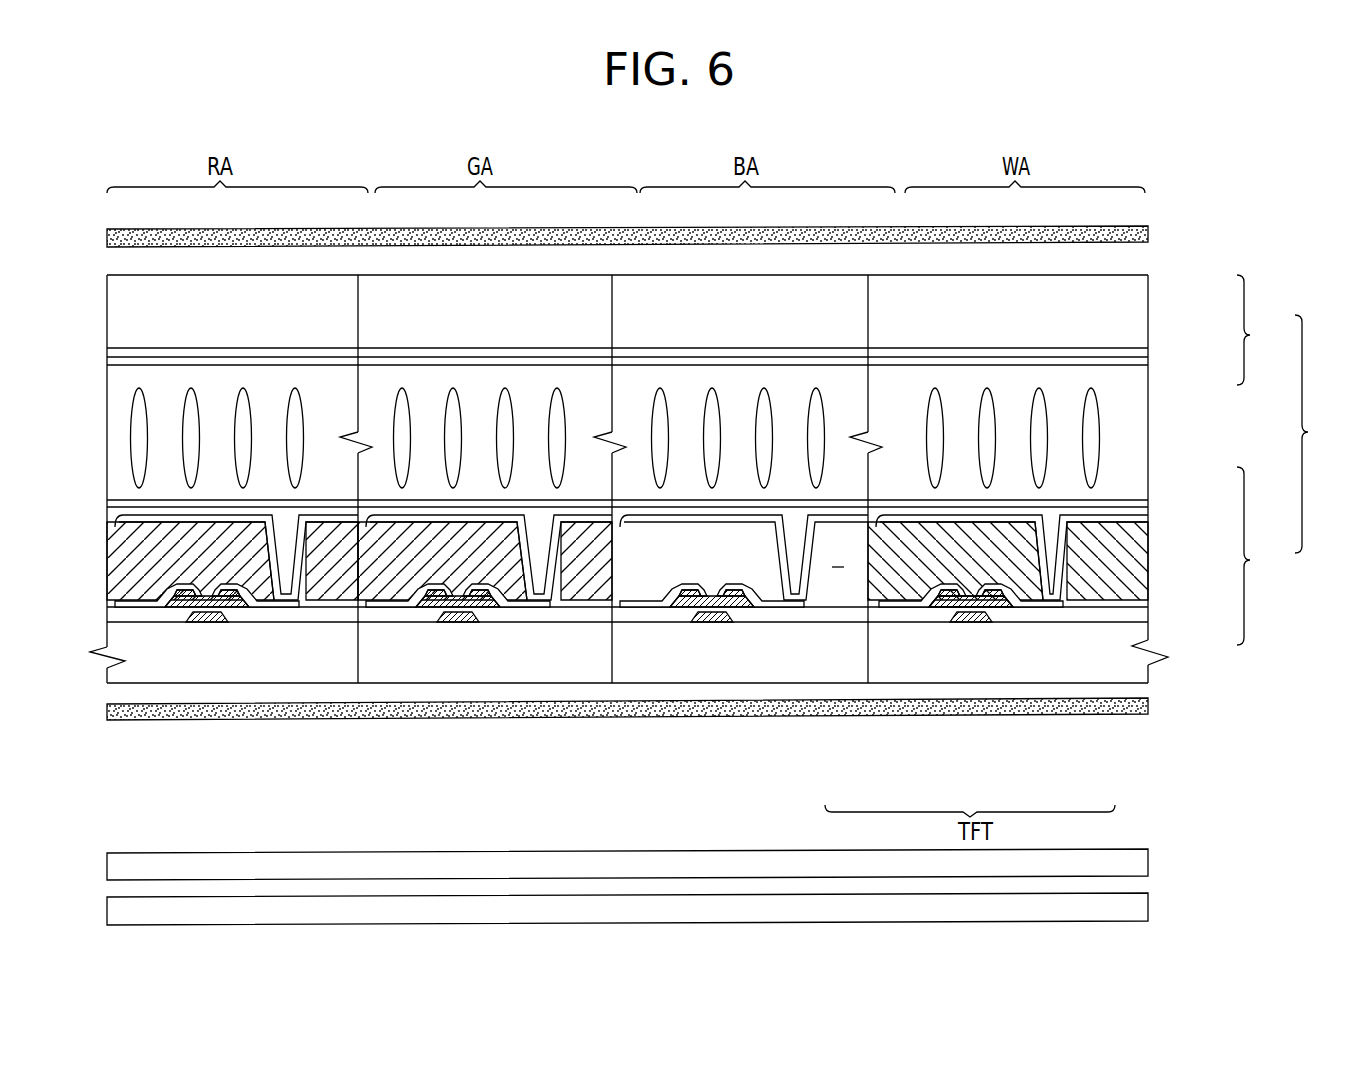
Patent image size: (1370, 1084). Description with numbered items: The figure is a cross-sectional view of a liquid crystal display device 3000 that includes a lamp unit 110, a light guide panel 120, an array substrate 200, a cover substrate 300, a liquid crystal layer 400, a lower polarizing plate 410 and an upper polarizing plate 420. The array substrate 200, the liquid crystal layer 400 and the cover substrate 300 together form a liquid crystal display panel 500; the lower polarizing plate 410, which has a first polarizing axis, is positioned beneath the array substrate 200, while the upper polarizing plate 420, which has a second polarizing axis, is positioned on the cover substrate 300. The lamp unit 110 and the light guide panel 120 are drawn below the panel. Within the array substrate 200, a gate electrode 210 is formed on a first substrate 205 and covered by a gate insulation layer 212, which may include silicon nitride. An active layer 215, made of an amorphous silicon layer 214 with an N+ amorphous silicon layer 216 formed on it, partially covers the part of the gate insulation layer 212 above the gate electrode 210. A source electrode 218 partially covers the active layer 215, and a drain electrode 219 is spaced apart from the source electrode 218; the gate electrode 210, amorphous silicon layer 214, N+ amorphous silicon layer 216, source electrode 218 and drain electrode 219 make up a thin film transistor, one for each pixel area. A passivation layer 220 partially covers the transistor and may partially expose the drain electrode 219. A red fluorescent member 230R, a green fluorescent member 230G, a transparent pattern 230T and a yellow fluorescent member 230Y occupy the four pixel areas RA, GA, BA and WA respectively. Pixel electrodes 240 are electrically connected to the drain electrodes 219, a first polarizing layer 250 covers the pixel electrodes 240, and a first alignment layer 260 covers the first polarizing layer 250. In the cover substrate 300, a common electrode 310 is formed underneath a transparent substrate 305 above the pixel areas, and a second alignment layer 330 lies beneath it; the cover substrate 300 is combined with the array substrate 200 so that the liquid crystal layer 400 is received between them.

The liquid crystal display device 3000 is at (690, 142).
The liquid crystal display panel 500 is at (1318, 434).
The cover substrate 300 is at (1264, 330).
The transparent substrate 305 is at (1148, 286).
The common electrode 310 is at (1148, 349).
The second alignment layer 330 is at (1148, 365).
The liquid crystal layer 400 is at (1148, 400).
The upper polarizing plate 420 is at (1150, 234).
The lower polarizing plate 410 is at (1150, 706).
The array substrate 200 is at (1264, 556).
The first substrate 205 is at (1148, 630).
The gate electrode 210 is at (1022, 612).
The gate insulation layer 212 is at (1060, 610).
The amorphous silicon layer 214 is at (975, 610).
The active layer 215 is at (968, 770).
The N+ amorphous silicon layer 216 is at (940, 607).
The source electrode 218 is at (905, 608).
The drain electrode 219 is at (1090, 608).
The passivation layer 220 is at (622, 605).
The red fluorescent member 230R is at (337, 578).
The green fluorescent member 230G is at (582, 573).
The transparent pattern 230T is at (838, 567).
The yellow fluorescent member 230Y is at (1111, 568).
The pixel electrode 240 is at (1148, 515).
The first polarizing layer 250 is at (1148, 507).
The first alignment layer 260 is at (1148, 500).
The light guide panel 120 is at (1150, 863).
The lamp unit 110 is at (1150, 904).